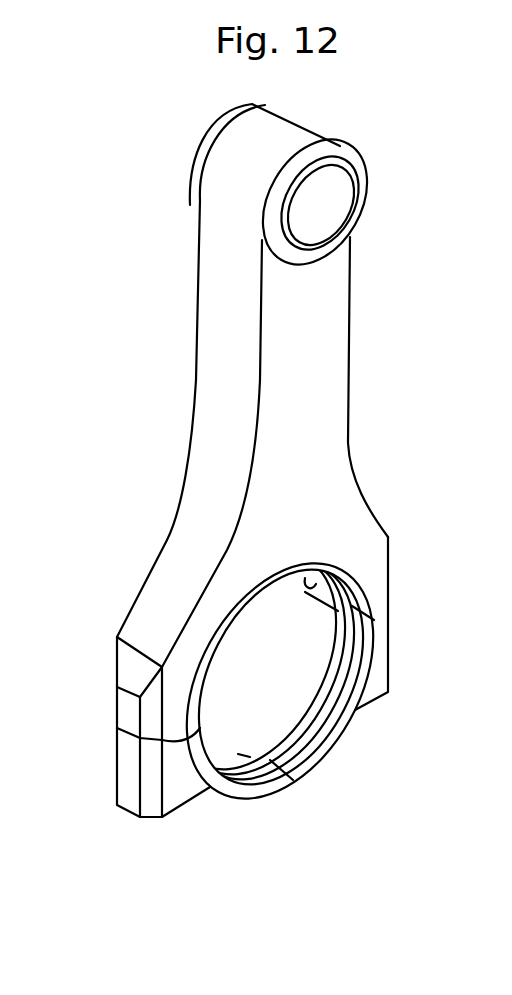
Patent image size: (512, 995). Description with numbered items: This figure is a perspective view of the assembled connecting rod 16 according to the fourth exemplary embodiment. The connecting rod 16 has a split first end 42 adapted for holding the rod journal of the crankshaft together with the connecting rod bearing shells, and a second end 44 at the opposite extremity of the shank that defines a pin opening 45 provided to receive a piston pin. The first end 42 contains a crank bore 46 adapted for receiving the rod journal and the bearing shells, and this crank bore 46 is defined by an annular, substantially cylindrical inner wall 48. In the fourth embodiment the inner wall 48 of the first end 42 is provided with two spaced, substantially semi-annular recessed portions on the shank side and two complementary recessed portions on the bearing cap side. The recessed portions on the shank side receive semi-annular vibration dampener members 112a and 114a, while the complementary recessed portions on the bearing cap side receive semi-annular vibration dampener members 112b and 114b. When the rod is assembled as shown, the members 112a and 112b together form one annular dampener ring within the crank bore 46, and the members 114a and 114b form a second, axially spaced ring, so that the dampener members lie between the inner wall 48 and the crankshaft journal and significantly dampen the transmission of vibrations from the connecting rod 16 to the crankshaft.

The connecting rod 16 is at (382, 397).
The split first end 42 is at (395, 573).
The second end 44 is at (235, 195).
The pin opening 45 is at (327, 205).
The crank bore 46 is at (247, 663).
The inner wall 48 is at (315, 730).
The vibration dampener member 112a is at (307, 580).
The vibration dampener member 112b is at (245, 754).
The vibration dampener member 114a is at (363, 622).
The vibration dampener member 114b is at (293, 780).